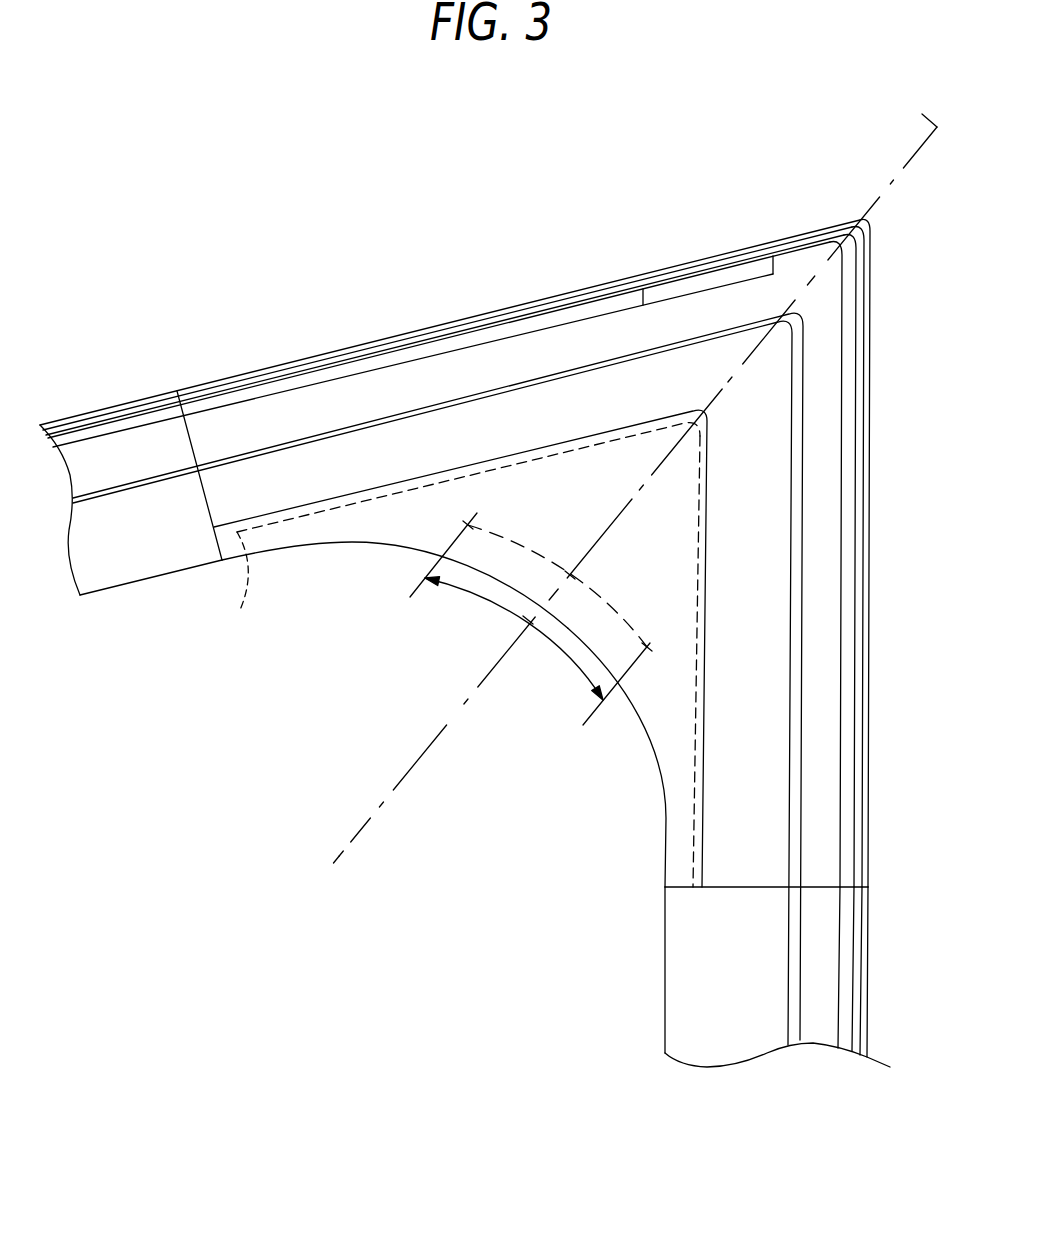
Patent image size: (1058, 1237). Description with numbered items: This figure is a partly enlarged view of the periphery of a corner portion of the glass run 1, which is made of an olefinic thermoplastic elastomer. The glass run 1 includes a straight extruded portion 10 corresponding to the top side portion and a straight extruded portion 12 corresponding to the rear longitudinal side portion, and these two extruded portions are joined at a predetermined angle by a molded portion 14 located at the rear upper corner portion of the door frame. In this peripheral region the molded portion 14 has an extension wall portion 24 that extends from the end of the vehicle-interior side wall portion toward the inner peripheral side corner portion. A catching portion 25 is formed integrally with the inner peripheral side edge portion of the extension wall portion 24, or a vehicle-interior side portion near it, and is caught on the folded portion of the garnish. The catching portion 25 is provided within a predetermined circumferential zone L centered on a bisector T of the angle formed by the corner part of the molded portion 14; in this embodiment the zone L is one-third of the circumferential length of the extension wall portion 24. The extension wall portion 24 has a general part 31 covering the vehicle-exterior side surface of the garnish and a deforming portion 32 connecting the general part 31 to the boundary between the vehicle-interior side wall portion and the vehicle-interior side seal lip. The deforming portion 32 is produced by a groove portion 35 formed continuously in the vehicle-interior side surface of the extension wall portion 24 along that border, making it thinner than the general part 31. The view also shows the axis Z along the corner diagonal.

The glass run 1 is at (547, 258).
The extruded portion 10 is at (127, 403).
The extruded portion 12 is at (867, 960).
The molded portion 14 is at (870, 575).
The extension wall portion 24 is at (298, 547).
The catching portion 25 is at (597, 593).
The general part 31 is at (663, 740).
The deforming portion 32 is at (695, 838).
The groove portion 35 is at (236, 587).
The predetermined circumferential zone L is at (573, 667).
The bisector T is at (433, 738).
The diagonal axis Z is at (897, 93).